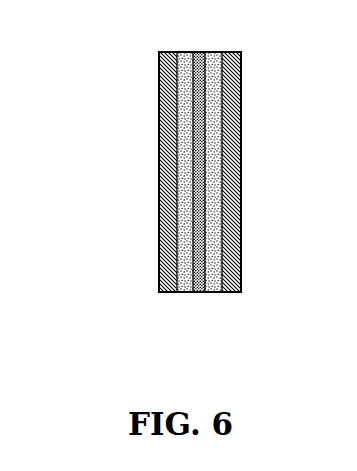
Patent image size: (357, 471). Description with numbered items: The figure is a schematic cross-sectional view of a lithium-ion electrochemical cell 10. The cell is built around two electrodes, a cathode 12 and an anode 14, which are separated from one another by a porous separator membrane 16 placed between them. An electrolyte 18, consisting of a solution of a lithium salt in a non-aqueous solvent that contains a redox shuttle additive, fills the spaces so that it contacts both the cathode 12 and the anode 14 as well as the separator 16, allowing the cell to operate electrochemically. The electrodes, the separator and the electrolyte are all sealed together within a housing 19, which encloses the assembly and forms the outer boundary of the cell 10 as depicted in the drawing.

The lithium-ion electrochemical cell 10 is at (119, 66).
The cathode 12 is at (159, 105).
The anode 14 is at (242, 89).
The porous separator membrane 16 is at (212, 293).
The electrolyte 18 is at (181, 157).
The housing 19 is at (216, 52).